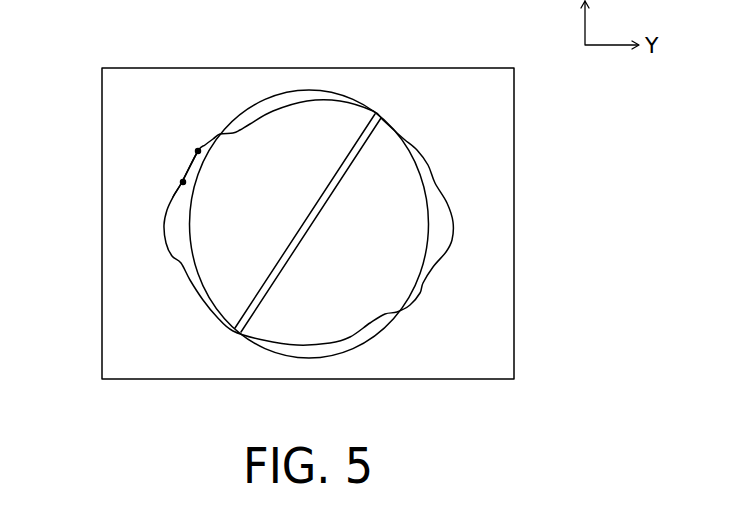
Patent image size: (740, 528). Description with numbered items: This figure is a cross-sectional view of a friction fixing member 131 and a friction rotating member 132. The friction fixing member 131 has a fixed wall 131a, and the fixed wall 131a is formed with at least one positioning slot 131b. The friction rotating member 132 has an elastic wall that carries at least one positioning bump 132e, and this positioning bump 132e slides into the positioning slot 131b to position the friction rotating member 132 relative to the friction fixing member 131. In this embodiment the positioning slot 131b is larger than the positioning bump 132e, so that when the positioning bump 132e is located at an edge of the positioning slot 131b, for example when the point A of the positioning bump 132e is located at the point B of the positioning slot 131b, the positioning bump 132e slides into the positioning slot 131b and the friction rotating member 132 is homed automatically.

The friction fixing member 131 is at (272, 102).
The fixed wall 131a is at (405, 80).
The positioning slot 131b is at (187, 220).
The friction rotating member 132 is at (218, 318).
The positioning bump 132e is at (215, 145).
The point A is at (198, 151).
The point B is at (183, 182).